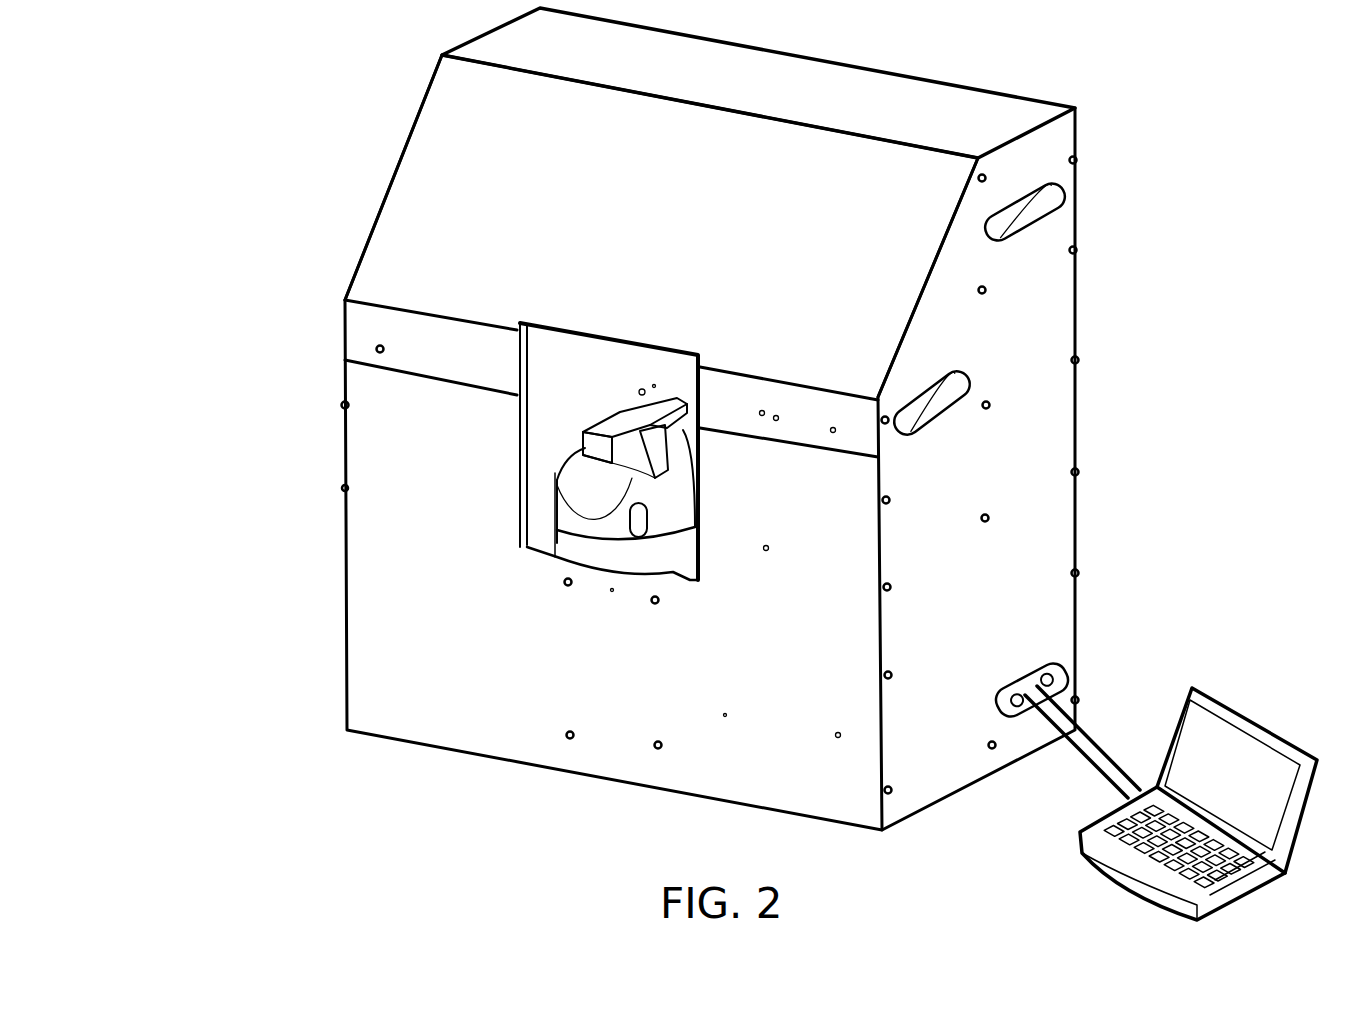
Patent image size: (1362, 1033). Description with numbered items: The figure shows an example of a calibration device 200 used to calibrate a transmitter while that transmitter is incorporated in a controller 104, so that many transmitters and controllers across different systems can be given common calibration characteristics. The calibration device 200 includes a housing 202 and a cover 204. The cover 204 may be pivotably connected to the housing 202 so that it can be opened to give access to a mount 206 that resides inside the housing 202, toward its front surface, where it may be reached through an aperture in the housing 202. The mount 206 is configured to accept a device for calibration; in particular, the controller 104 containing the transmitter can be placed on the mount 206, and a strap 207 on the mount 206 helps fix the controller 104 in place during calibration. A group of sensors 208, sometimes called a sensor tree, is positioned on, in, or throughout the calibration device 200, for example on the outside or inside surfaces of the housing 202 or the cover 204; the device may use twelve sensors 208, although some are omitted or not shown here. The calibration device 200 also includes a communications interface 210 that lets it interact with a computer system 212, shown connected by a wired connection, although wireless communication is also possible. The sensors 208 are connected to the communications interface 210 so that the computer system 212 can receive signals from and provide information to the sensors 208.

The calibration device 200 is at (225, 168).
The housing 202 is at (385, 640).
The cover 204 is at (405, 145).
The mount 206 is at (573, 493).
The strap 207 is at (620, 414).
The controller 104 is at (600, 443).
The sensors 208 is at (566, 737).
The communications interface 210 is at (1058, 680).
The computer system 212 is at (1262, 725).